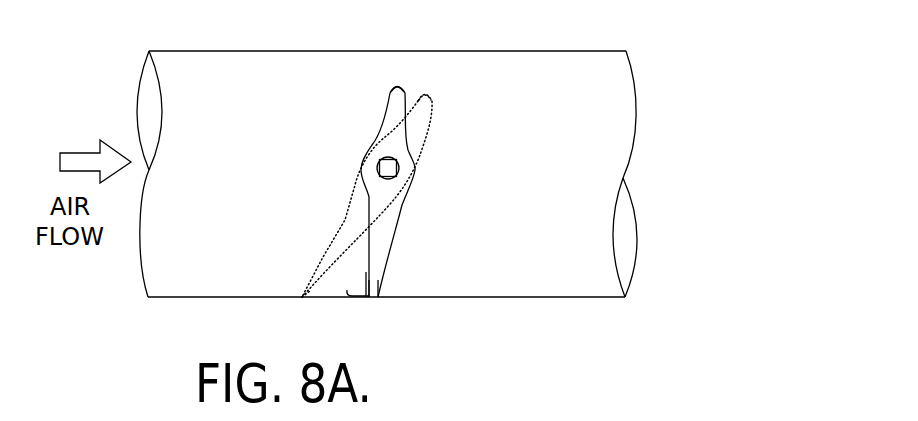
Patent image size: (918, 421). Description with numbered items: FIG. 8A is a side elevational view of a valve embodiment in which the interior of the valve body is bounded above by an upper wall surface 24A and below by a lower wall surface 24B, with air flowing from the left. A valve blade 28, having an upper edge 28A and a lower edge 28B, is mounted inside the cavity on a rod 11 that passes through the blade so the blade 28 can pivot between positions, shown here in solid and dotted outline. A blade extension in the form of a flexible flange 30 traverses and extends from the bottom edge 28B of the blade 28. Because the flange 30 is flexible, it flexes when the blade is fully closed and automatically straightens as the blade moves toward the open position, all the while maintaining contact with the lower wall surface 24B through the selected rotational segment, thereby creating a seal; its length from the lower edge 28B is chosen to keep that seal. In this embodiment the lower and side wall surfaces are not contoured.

The rod 11 is at (389, 169).
The upper wall surface 24A is at (412, 51).
The lower wall surface 24B is at (490, 297).
The valve blade 28 is at (346, 213).
The upper edge 28A is at (447, 90).
The lower edge 28B is at (372, 297).
The flexible flange 30 is at (302, 291).